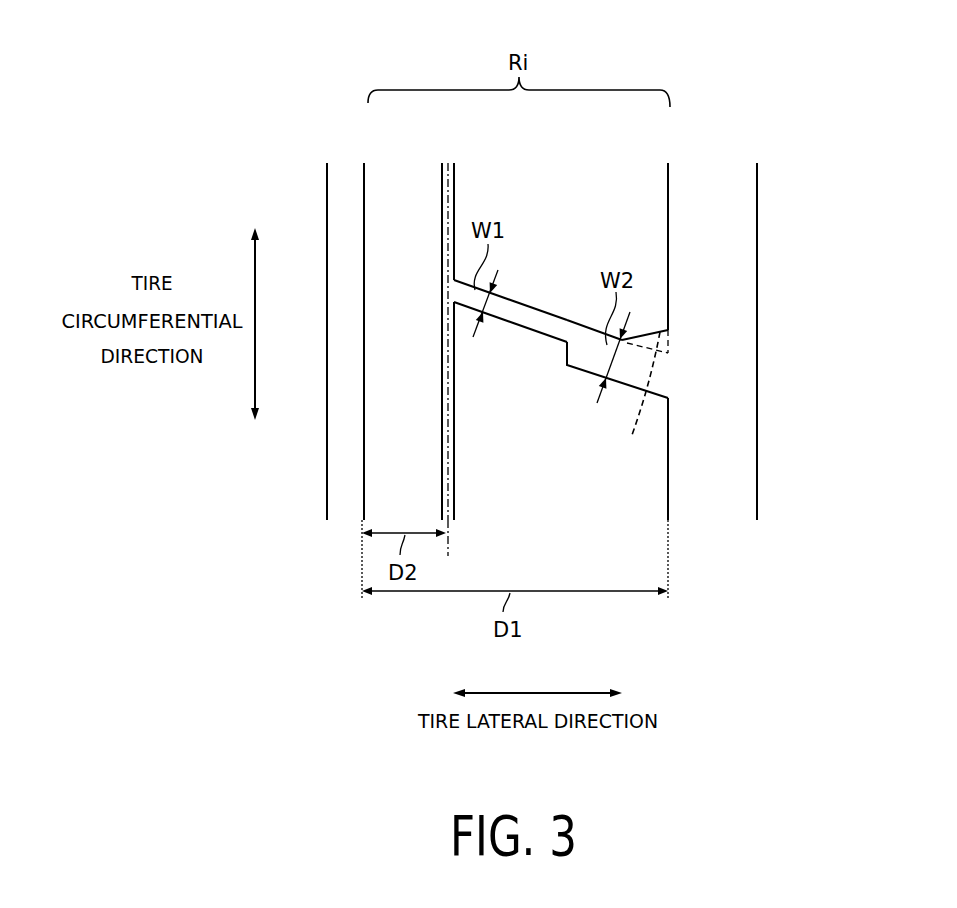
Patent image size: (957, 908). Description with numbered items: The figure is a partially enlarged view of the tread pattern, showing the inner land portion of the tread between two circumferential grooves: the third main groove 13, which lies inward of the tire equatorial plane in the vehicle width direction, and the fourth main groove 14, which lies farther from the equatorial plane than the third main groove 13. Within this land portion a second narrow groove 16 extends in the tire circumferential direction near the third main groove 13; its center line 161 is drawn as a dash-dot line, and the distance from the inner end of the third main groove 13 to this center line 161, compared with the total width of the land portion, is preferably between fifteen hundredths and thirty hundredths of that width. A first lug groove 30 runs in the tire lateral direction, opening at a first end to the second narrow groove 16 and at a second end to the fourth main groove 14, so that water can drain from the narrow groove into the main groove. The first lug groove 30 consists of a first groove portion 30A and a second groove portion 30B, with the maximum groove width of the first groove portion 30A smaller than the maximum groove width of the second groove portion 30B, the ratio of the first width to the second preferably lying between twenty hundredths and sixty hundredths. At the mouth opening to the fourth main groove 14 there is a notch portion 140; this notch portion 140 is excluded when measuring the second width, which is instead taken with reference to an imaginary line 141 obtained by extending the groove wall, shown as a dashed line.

The third main groove 13 is at (345, 165).
The fourth main groove 14 is at (731, 172).
The second narrow groove 16 is at (452, 164).
The center line 161 is at (460, 182).
The first lug groove 30 is at (561, 382).
The first groove portion 30A is at (533, 320).
The second groove portion 30B is at (583, 365).
The notch portion 140 is at (658, 333).
The imaginary line 141 is at (637, 400).